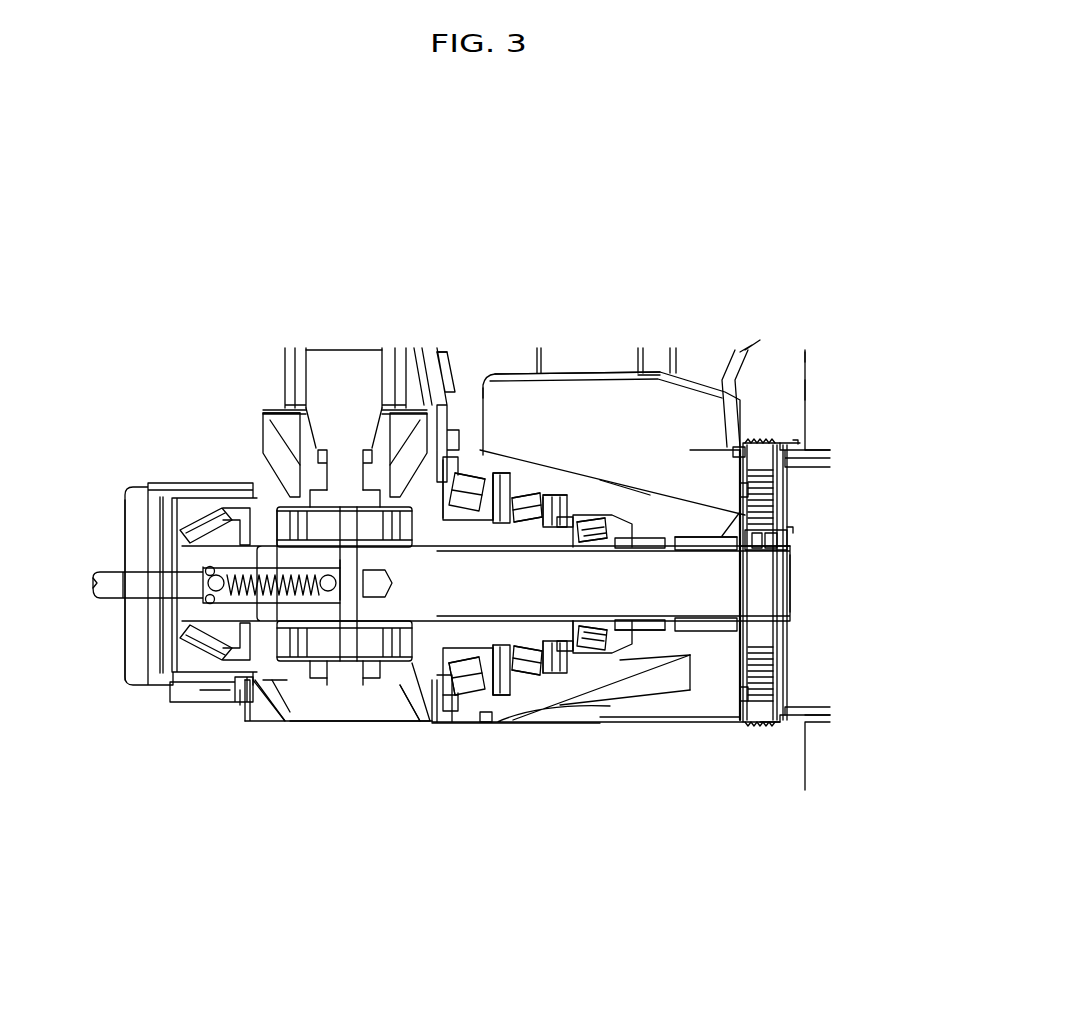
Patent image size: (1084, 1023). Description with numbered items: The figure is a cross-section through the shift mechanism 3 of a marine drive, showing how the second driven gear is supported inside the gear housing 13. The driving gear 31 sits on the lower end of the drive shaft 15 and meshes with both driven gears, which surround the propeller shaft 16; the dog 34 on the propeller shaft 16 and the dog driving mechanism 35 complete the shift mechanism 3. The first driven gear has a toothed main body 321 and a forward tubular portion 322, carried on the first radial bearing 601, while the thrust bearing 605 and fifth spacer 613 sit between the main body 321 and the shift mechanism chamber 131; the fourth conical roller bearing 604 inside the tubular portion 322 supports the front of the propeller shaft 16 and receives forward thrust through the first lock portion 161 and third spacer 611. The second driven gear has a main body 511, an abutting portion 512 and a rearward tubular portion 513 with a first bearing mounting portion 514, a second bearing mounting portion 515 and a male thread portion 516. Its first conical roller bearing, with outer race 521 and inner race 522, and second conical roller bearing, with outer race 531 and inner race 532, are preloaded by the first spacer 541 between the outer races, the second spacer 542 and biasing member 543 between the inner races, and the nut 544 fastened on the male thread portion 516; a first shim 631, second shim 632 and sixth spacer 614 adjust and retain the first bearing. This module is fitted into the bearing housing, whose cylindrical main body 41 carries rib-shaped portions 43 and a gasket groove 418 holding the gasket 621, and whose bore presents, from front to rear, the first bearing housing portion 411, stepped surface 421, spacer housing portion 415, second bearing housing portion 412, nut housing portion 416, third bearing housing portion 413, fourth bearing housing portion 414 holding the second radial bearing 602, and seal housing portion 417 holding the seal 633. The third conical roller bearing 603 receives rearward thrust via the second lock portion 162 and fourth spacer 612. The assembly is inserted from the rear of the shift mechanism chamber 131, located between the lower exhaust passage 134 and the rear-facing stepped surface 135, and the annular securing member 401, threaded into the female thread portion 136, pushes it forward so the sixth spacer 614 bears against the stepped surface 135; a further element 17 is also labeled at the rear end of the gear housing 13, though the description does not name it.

The shift mechanism 3 is at (290, 828).
The gear housing 13 is at (835, 336).
The drive shaft 15 is at (348, 373).
The propeller shaft 16 is at (780, 600).
The flange 17 is at (812, 460).
The driving gear 31 is at (288, 442).
The dog 34 is at (350, 662).
The dog driving mechanism 35 is at (266, 583).
The main body 41 is at (635, 662).
The rib-shaped portions 43 is at (695, 682).
The shift mechanism chamber 131 is at (348, 723).
The lower exhaust passage 134 is at (690, 413).
The stepped surface 135 is at (437, 724).
The female thread portion 136 is at (763, 730).
The first lock portion 161 is at (273, 700).
The second lock portion 162 is at (585, 682).
The main body 321 is at (263, 702).
The tubular portion 322 is at (183, 700).
The securing member 401 is at (762, 716).
The first bearing housing portion 411 is at (505, 483).
The second bearing housing portion 412 is at (548, 510).
The third bearing housing portion 413 is at (640, 543).
The fourth bearing housing portion 414 is at (700, 663).
The spacer housing portion 415 is at (540, 495).
The nut housing portion 416 is at (600, 520).
The seal housing portion 417 is at (788, 543).
The gasket groove 418 is at (483, 382).
The stepped surface 421 is at (497, 722).
The main body 511 is at (433, 725).
The abutting portion 512 is at (338, 660).
The tubular portion 513 is at (547, 722).
The first bearing mounting portion 514 is at (489, 720).
The second bearing mounting portion 515 is at (540, 712).
The male thread portion 516 is at (545, 535).
The outer race 521 is at (493, 470).
The inner race 522 is at (546, 492).
The outer race 531 is at (498, 522).
The inner race 532 is at (535, 680).
The first spacer 541 is at (644, 383).
The second spacer 542 is at (497, 547).
The biasing member 543 is at (537, 537).
The nut 544 is at (600, 503).
The first radial bearing 601 is at (212, 703).
The second radial bearing 602 is at (798, 530).
The third conical roller bearing 603 is at (720, 538).
The fourth conical roller bearing 604 is at (205, 625).
The thrust bearing 605 is at (252, 722).
The third spacer 611 is at (247, 628).
The fourth spacer 612 is at (610, 621).
The fifth spacer 613 is at (242, 708).
The sixth spacer 614 is at (420, 692).
The gasket 621 is at (463, 380).
The first shim 631 is at (472, 722).
The second shim 632 is at (470, 700).
The seal 633 is at (780, 550).